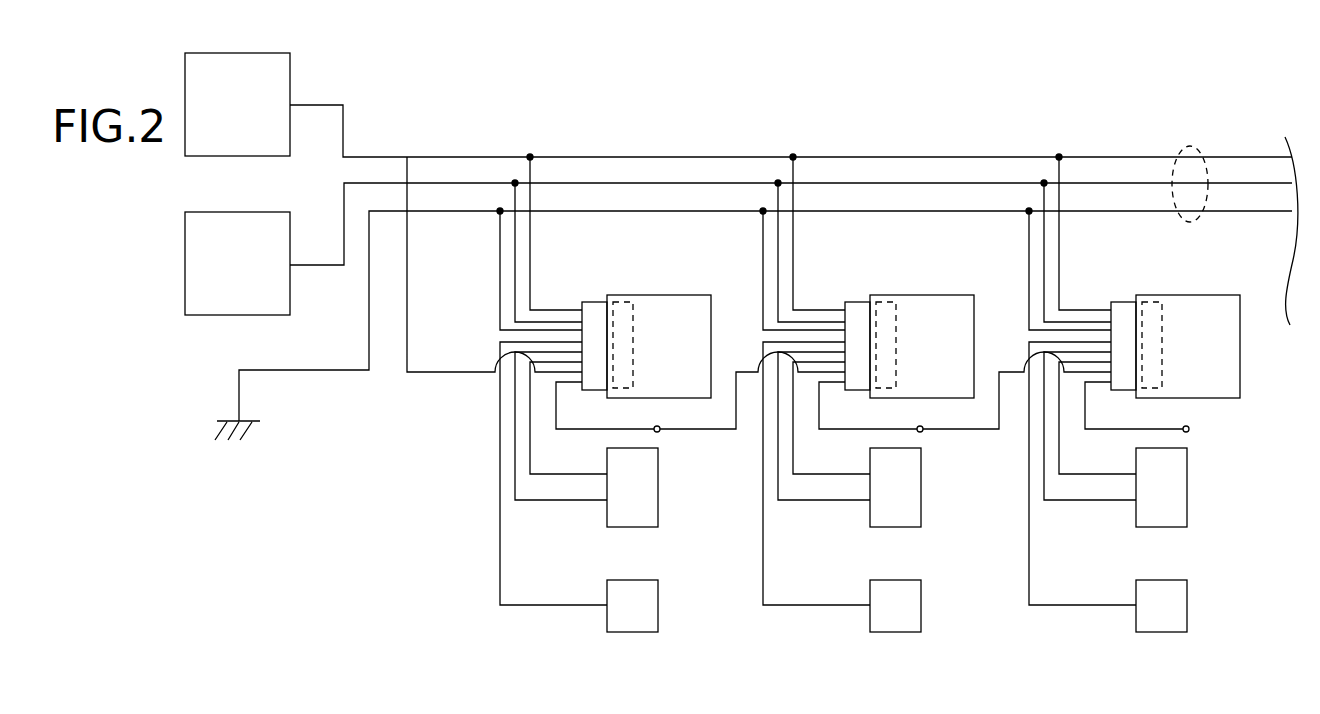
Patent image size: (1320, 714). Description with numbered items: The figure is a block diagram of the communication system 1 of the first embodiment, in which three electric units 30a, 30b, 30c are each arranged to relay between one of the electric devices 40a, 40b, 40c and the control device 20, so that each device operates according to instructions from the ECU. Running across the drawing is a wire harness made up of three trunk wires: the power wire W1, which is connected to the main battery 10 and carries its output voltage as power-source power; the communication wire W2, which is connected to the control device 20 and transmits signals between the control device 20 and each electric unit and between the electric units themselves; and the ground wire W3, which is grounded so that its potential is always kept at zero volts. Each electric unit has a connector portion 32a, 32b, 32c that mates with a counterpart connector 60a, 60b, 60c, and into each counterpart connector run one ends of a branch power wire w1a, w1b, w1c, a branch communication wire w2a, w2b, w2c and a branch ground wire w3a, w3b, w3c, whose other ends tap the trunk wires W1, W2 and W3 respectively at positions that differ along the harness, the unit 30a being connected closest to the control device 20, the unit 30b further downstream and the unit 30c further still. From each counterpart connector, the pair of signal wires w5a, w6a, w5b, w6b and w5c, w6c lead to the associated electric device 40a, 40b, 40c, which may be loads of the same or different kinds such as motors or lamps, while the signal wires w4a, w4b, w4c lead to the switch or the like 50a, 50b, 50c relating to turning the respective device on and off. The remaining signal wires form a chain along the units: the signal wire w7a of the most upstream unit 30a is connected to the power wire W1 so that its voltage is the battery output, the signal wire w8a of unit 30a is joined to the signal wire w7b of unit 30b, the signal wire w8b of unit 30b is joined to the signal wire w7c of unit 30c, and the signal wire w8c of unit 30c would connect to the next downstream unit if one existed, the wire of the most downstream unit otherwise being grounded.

The communication system 1 is at (843, 92).
The main battery 10 is at (235, 53).
The control device 20 is at (235, 212).
The power wire W1 is at (317, 105).
The communication wire W2 is at (320, 265).
The ground wire W3 is at (318, 375).
The electric unit 30a is at (673, 295).
The electric unit 30b is at (936, 295).
The electric unit 30c is at (1202, 295).
The connector portion 32a is at (618, 337).
The connector portion 32b is at (881, 337).
The connector portion 32c is at (1147, 337).
The electric device 40a is at (658, 505).
The electric device 40b is at (921, 505).
The electric device 40c is at (1187, 505).
The switch or the like 50a is at (658, 615).
The switch or the like 50b is at (921, 615).
The switch or the like 50c is at (1187, 615).
The counterpart connector 60a is at (592, 302).
The counterpart connector 60b is at (855, 302).
The counterpart connector 60c is at (1121, 302).
The power wire w1a is at (531, 226).
The power wire w1b is at (794, 226).
The power wire w1c is at (1060, 226).
The communication wire w2a is at (515, 218).
The communication wire w2b is at (778, 218).
The communication wire w2c is at (1044, 218).
The ground wire w3a is at (500, 250).
The ground wire w3b is at (763, 250).
The ground wire w3c is at (1029, 250).
The signal wire w4a is at (563, 607).
The signal wire w4b is at (826, 607).
The signal wire w4c is at (1092, 607).
The signal wire w5a is at (565, 502).
The signal wire w5b is at (828, 502).
The signal wire w5c is at (1094, 502).
The signal wire w6a is at (553, 474).
The signal wire w6b is at (816, 474).
The signal wire w6c is at (1082, 474).
The signal wire w7a is at (455, 374).
The signal wire w7b is at (668, 431).
The signal wire w7c is at (931, 431).
The signal wire w8a is at (580, 428).
The signal wire w8b is at (843, 428).
The signal wire w8c is at (1109, 428).